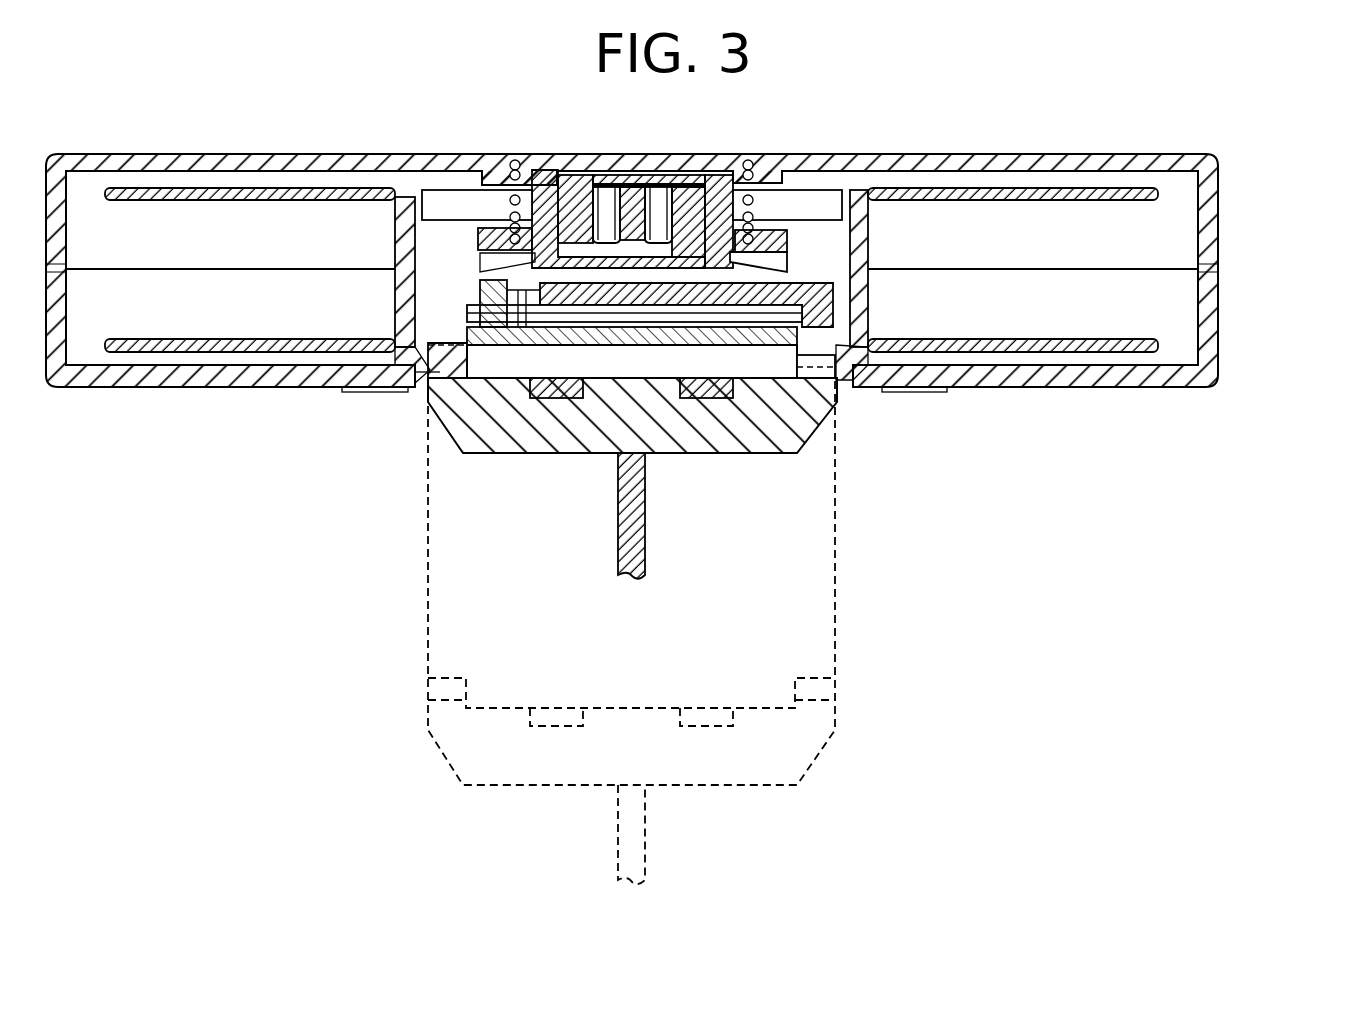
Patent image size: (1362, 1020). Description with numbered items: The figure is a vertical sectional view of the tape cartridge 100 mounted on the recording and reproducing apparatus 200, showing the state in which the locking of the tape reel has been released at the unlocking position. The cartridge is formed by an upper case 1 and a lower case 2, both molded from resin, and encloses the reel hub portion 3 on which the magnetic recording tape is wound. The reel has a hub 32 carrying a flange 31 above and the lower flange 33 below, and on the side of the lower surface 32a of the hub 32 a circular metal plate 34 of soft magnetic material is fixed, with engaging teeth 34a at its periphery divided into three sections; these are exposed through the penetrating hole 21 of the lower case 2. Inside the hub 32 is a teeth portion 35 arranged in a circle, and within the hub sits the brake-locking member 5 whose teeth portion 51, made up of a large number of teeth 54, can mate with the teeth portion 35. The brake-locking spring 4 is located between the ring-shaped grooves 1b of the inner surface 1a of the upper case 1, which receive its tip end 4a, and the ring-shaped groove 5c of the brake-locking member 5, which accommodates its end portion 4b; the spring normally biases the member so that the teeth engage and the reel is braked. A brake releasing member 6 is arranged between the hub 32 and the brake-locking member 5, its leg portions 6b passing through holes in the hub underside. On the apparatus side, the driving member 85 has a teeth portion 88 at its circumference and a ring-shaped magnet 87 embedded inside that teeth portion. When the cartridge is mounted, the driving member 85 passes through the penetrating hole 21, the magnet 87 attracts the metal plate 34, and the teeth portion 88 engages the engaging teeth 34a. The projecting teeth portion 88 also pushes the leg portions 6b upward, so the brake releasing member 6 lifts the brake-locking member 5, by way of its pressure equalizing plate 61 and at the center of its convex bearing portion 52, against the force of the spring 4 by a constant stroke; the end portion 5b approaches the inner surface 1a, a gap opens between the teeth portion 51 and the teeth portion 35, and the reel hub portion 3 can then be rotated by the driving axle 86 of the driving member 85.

The upper case 1 is at (1222, 181).
The inner surface of the upper case 1a is at (862, 182).
The ring-shaped grooves 1b is at (500, 168).
The lower case 2 is at (1178, 392).
The reel hub portion 3 is at (1030, 337).
The brake-locking spring 4 is at (512, 207).
The tip end of the brake-locking spring 4a is at (518, 168).
The end portion of the brake-locking spring 4b is at (520, 240).
The brake-locking member 5 is at (768, 178).
The end portion 5b is at (730, 196).
The ring-shaped groove 5c is at (760, 238).
The brake releasing member 6 is at (807, 298).
The leg portions 6b is at (805, 310).
The penetrating hole 21 is at (426, 374).
The upper plate 31 is at (1082, 195).
The hub 32 is at (868, 300).
The lower surface of the hub 32a is at (820, 392).
The lower flange 33 is at (1105, 352).
The metal plate 34 is at (745, 350).
The engaging teeth 34a is at (455, 365).
The teeth portion 35 is at (495, 290).
The teeth portion 51 is at (790, 262).
The convex bearing portion 52 is at (615, 255).
The teeth 54 is at (525, 258).
The pressure equalizing plate 61 is at (672, 266).
The driving member 85 is at (790, 352).
The driving axle 86 is at (645, 547).
The ring-shaped magnet 87 is at (560, 388).
The teeth portion 88 is at (812, 368).
The tape cartridge 100 is at (1238, 244).
The recording and reproducing apparatus 200 is at (470, 462).